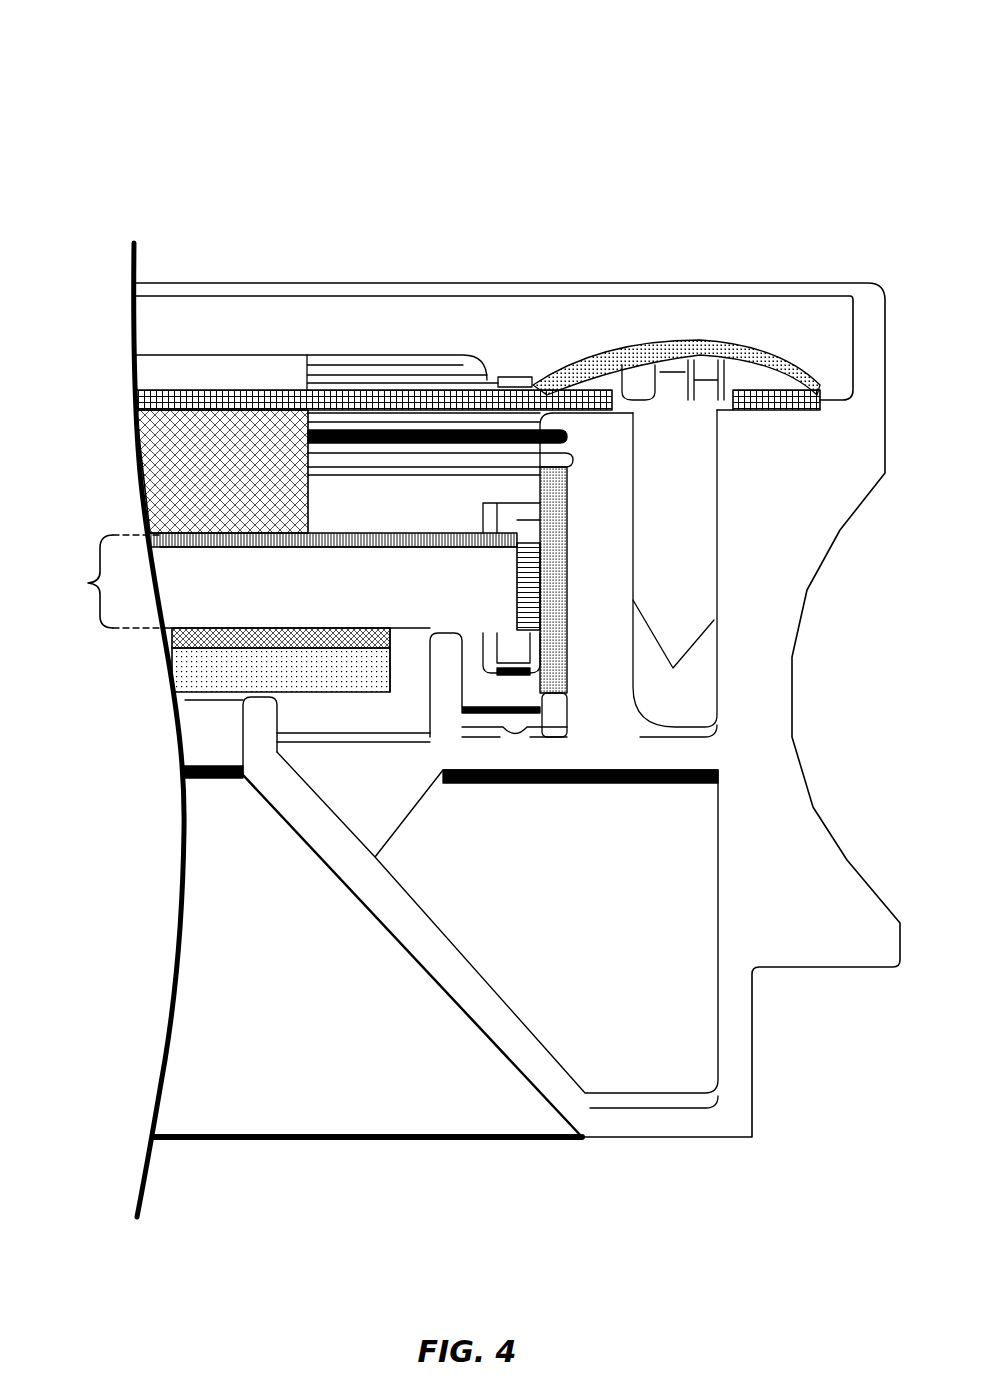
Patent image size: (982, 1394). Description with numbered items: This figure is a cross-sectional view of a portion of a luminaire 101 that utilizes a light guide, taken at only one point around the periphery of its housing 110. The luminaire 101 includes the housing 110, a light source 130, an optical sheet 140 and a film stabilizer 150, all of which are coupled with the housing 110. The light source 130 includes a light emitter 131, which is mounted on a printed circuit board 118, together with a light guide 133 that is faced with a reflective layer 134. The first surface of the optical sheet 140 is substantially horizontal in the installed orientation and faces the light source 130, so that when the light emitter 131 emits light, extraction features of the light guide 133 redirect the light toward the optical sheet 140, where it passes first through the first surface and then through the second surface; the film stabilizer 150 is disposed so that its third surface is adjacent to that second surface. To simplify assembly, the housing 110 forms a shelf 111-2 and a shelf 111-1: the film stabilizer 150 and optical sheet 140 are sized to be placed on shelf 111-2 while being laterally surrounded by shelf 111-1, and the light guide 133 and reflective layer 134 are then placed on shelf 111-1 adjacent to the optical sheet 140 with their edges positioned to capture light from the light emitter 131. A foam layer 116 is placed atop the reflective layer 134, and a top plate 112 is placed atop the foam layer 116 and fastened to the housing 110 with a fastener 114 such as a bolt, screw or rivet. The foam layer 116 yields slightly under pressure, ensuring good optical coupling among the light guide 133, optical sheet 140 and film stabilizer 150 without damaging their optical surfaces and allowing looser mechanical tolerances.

The luminaire 101 is at (256, 96).
The housing 110 is at (870, 318).
The shelf 111-1 is at (447, 652).
The shelf 111-2 is at (260, 706).
The top plate 112 is at (285, 398).
The fastener 114 is at (670, 495).
The foam layer 116 is at (197, 443).
The printed circuit board 118 is at (553, 545).
The light source 130 is at (264, 581).
The light emitter 131 is at (530, 560).
The light guide 133 is at (247, 572).
The reflective layer 134 is at (177, 540).
The optical sheet 140 is at (176, 641).
The film stabilizer 150 is at (197, 673).